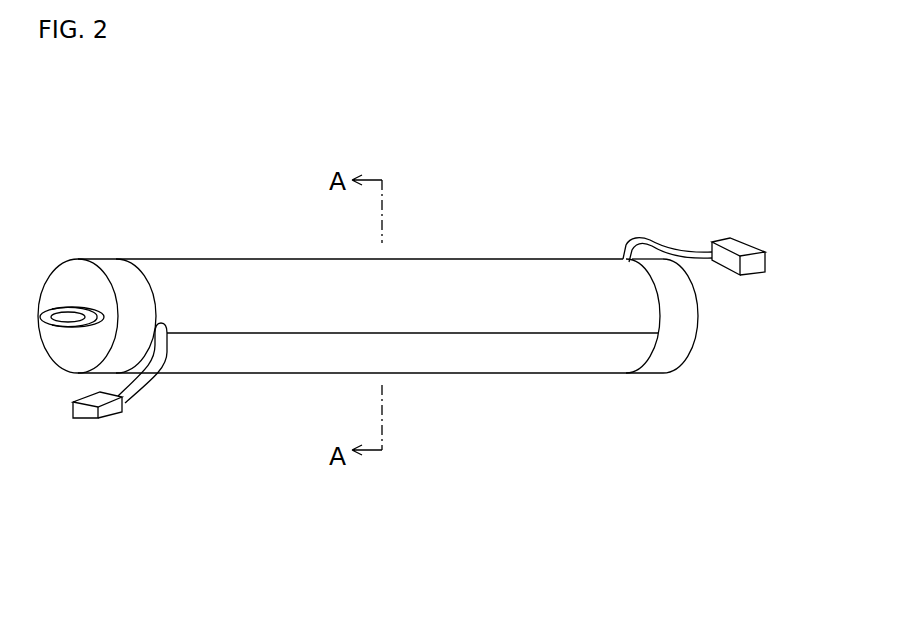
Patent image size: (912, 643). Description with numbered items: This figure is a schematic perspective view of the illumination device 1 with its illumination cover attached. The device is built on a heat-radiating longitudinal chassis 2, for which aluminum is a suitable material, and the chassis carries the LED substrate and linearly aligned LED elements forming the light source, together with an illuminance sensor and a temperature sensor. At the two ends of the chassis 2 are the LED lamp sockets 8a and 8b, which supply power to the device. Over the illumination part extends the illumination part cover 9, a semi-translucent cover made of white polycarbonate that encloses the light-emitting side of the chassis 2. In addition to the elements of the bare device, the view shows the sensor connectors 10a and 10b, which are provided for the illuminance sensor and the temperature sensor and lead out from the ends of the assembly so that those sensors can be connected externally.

The illumination device 1 is at (453, 218).
The chassis 2 is at (276, 366).
The illumination part cover 9 is at (279, 278).
The LED lamp socket 8a is at (69, 307).
The LED lamp socket 8b is at (699, 322).
The sensor connector 10a is at (100, 407).
The sensor connector 10b is at (742, 250).